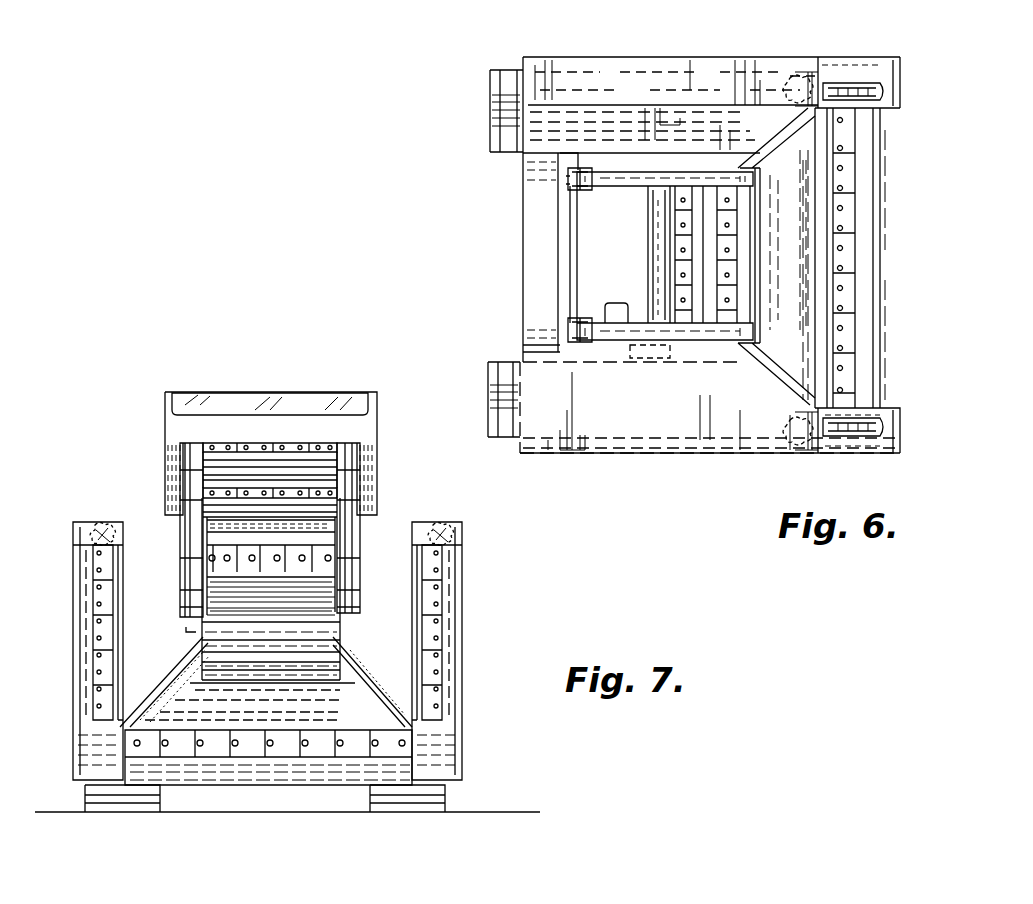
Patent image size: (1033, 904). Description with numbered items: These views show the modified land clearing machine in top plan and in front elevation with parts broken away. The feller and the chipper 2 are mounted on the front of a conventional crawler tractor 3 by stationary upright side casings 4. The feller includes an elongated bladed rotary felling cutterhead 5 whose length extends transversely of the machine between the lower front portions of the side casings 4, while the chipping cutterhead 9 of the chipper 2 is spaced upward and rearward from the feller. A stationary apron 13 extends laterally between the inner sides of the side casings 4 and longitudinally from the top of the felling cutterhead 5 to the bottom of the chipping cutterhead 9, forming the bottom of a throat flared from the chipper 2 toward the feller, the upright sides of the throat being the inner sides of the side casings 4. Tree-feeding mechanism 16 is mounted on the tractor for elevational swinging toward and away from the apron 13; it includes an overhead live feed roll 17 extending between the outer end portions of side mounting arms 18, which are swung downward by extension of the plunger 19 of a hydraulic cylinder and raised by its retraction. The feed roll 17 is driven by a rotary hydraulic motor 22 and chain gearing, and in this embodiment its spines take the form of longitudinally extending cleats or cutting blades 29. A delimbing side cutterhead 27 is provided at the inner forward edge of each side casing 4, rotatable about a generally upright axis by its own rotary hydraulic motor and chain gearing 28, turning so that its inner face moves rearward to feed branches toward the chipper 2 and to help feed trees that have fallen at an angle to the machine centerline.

In FIG. 7, the chipper 2 is at (348, 636).
In FIG. 6, the crawler tractor 3 is at (668, 58).
In FIG. 7, the crawler tractor 3 is at (378, 472).
In FIG. 6, the side casings 4 is at (895, 65).
In FIG. 7, the side casings 4 is at (78, 748).
In FIG. 6, the felling cutterhead 5 is at (882, 185).
In FIG. 7, the felling cutterhead 5 is at (343, 762).
In FIG. 6, the chipping cutterhead 9 is at (556, 268).
In FIG. 7, the chipping cutterhead 9 is at (235, 641).
In FIG. 6, the apron 13 is at (800, 292).
In FIG. 7, the apron 13 is at (284, 724).
In FIG. 6, the tree-feeding mechanism 16 is at (759, 200).
In FIG. 7, the tree-feeding mechanism 16 is at (171, 447).
In FIG. 6, the overhead live feed roll 17 is at (690, 250).
In FIG. 7, the overhead live feed roll 17 is at (310, 462).
In FIG. 6, the side mounting arms 18 is at (620, 182).
In FIG. 6, the plunger 19 is at (572, 168).
In FIG. 6, the rotary hydraulic motor 22 is at (626, 302).
In FIG. 6, the delimbing side cutterhead 27 is at (850, 82).
In FIG. 7, the delimbing side cutterhead 27 is at (93, 606).
In FIG. 6, the chain gearing 28 is at (796, 74).
In FIG. 7, the chain gearing 28 is at (108, 526).
In FIG. 6, the cleats or cutting blades 29 is at (735, 325).
In FIG. 7, the cleats or cutting blades 29 is at (242, 490).